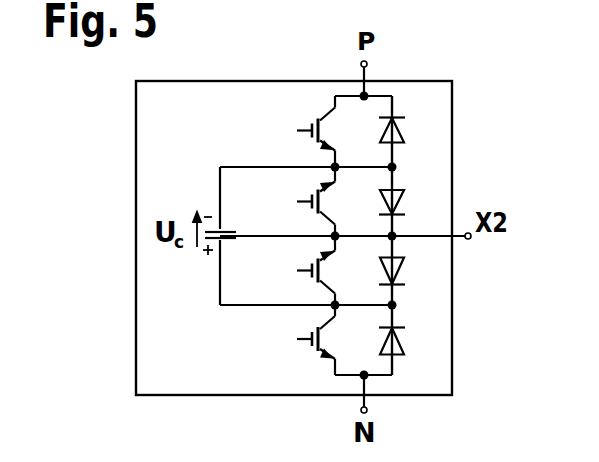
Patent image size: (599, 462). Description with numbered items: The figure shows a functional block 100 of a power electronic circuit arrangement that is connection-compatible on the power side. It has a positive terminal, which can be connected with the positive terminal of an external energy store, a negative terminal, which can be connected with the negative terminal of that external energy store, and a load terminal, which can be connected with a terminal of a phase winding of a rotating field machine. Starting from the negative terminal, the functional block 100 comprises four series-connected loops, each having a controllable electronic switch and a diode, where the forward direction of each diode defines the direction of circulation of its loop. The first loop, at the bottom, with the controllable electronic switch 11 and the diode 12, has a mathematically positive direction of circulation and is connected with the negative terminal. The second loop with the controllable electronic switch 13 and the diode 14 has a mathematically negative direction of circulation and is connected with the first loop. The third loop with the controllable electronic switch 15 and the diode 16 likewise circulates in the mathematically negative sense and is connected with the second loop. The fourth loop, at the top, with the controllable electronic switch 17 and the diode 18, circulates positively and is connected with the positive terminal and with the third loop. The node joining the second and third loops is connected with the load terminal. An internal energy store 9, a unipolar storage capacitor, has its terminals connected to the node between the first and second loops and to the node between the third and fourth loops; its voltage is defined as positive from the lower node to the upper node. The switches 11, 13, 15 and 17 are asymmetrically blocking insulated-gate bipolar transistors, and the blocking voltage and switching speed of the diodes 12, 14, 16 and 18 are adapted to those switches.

The internal energy store 9 is at (230, 236).
The controllable electronic switch 11 is at (303, 340).
The diode 12 is at (411, 340).
The controllable electronic switch 13 is at (303, 270).
The diode 14 is at (411, 270).
The controllable electronic switch 15 is at (303, 200).
The diode 16 is at (411, 201).
The controllable electronic switch 17 is at (303, 130).
The diode 18 is at (411, 131).
The functional block 100 is at (420, 372).